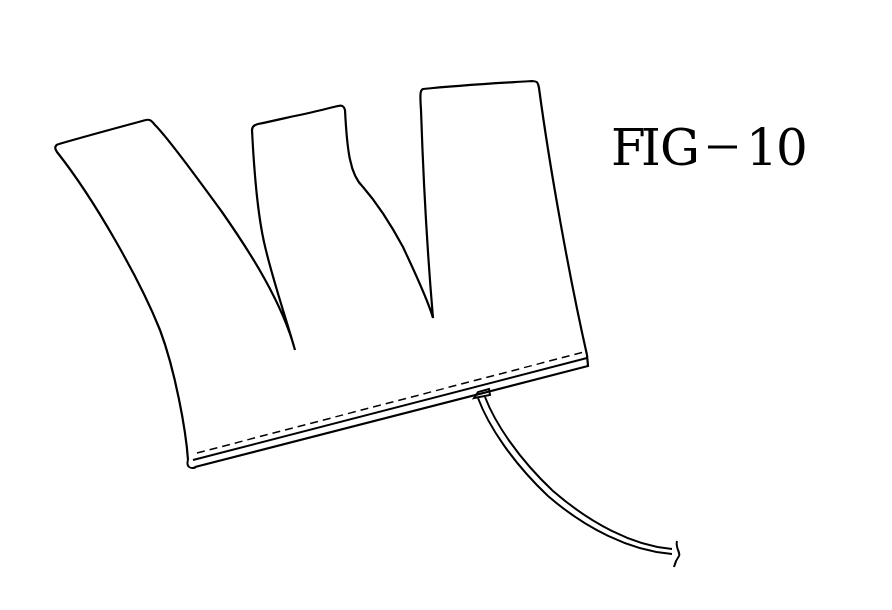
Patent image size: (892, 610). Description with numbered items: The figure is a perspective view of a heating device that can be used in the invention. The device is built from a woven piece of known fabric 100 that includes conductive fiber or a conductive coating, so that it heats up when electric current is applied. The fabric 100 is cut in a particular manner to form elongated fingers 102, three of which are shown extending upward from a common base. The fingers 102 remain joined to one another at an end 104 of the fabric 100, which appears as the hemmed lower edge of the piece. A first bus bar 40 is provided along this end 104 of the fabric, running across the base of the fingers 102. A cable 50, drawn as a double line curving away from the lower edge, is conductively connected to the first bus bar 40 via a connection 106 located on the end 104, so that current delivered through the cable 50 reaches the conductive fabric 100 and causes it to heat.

The fabric 100 is at (265, 449).
The elongated fingers 102 is at (105, 145).
The end 104 is at (358, 426).
The first bus bar 40 is at (190, 468).
The connection 106 is at (488, 391).
The cable 50 is at (577, 515).